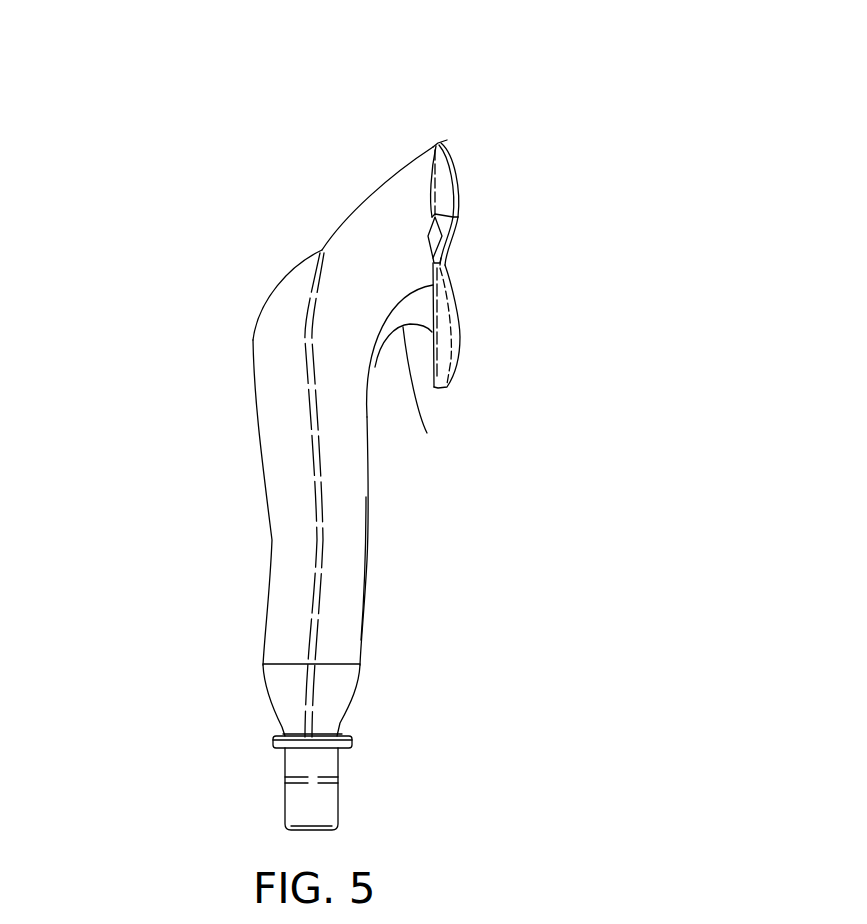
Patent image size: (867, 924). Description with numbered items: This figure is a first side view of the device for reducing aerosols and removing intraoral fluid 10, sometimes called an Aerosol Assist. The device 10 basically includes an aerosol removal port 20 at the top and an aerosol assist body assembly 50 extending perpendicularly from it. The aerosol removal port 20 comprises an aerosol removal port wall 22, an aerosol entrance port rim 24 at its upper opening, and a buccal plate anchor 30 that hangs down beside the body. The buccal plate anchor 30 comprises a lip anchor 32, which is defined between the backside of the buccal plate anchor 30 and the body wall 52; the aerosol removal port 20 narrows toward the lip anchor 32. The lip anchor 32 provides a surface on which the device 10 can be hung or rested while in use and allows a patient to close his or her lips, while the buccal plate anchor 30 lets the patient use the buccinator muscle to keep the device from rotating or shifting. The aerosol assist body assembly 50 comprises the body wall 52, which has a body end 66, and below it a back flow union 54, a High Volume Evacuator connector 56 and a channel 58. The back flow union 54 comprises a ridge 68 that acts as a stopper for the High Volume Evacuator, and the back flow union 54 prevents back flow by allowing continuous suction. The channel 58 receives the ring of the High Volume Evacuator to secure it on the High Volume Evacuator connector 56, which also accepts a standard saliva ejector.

The device for reducing aerosols and removing intraoral fluid 10 is at (573, 237).
The aerosol removal port 20 is at (281, 253).
The aerosol removal port wall 22 is at (407, 157).
The aerosol entrance port rim 24 is at (447, 140).
The buccal plate anchor 30 is at (457, 358).
The lip anchor 32 is at (427, 433).
The aerosol assist body assembly 50 is at (201, 527).
The body wall 52 is at (368, 553).
The back flow union 54 is at (353, 697).
The High Volume Evacuator connector 56 is at (339, 821).
The channel 58 is at (339, 780).
The body end 66 is at (340, 663).
The ridge 68 is at (273, 741).